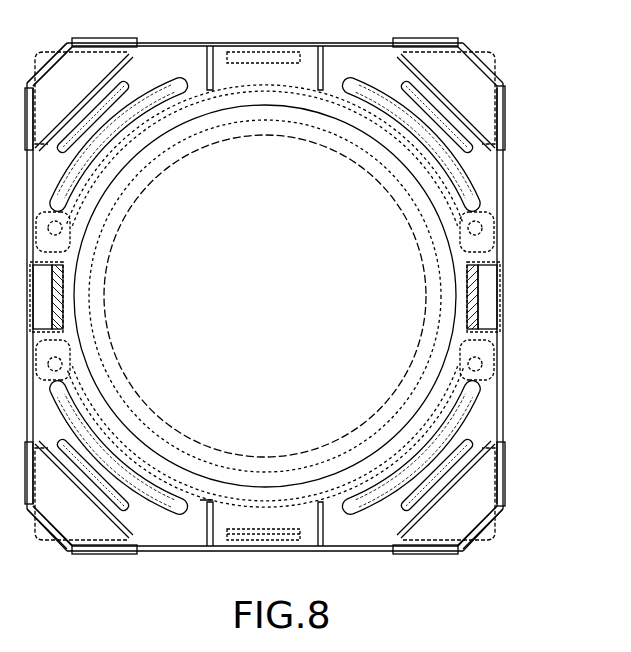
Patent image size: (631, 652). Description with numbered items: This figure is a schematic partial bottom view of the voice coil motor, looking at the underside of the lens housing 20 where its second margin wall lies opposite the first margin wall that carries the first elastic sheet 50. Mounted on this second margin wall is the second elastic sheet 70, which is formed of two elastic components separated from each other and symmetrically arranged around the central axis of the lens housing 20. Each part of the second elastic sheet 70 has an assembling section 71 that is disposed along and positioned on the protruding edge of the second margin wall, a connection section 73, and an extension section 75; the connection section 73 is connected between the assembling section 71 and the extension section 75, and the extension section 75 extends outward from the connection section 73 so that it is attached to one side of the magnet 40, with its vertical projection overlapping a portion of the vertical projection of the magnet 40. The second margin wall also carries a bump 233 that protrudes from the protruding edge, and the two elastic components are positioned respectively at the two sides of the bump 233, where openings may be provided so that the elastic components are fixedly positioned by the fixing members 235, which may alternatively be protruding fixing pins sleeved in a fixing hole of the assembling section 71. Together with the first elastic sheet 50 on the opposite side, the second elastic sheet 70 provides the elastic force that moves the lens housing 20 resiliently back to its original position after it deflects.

The lens housing 20 is at (455, 313).
The bump 233 is at (484, 279).
The fixing member 235 is at (483, 231).
The magnet 40 is at (504, 458).
The first elastic sheet 50 is at (501, 421).
The second elastic sheet 70 is at (577, 50).
The assembling section 71 is at (462, 184).
The connection section 73 is at (462, 116).
The extension section 75 is at (482, 62).